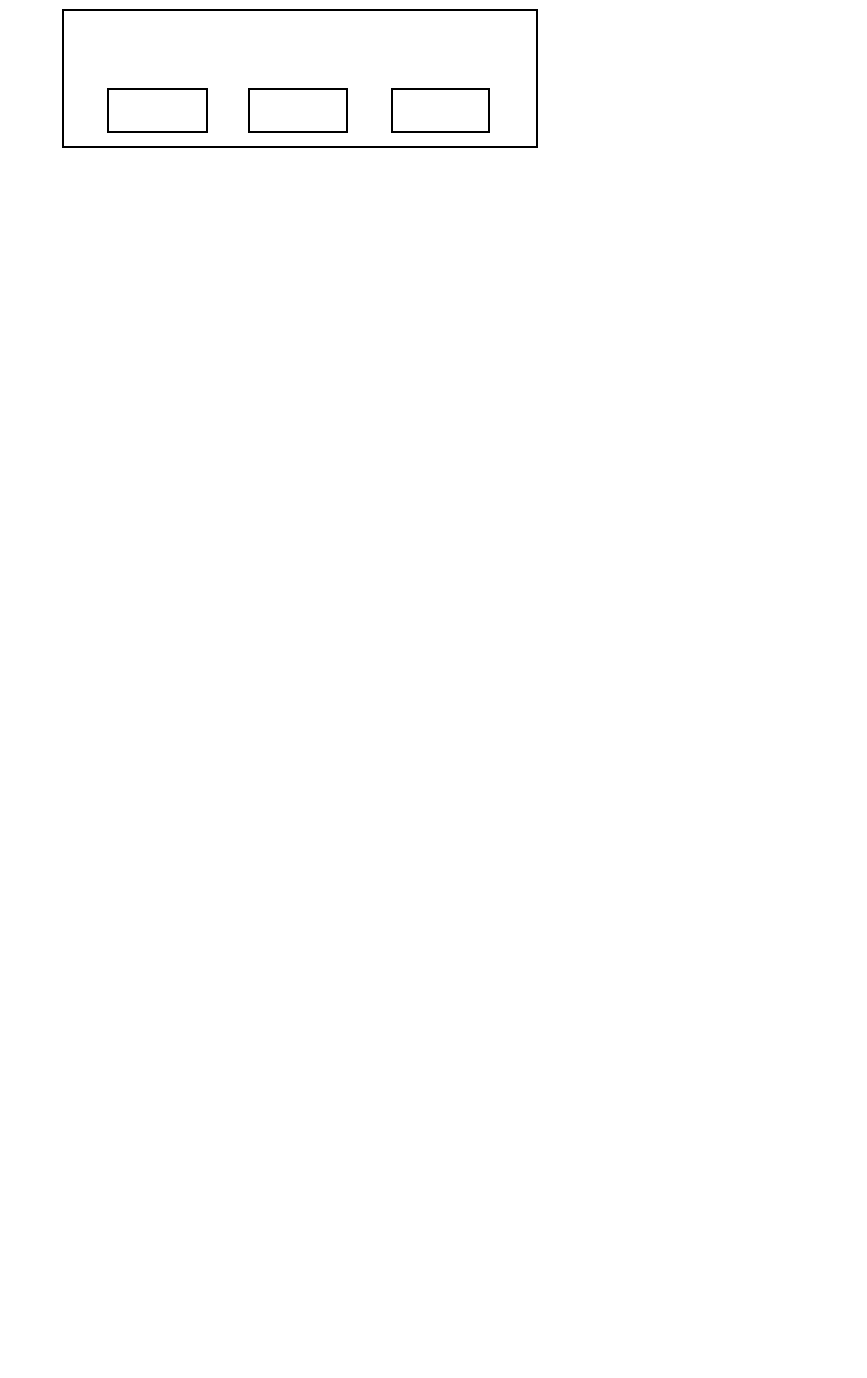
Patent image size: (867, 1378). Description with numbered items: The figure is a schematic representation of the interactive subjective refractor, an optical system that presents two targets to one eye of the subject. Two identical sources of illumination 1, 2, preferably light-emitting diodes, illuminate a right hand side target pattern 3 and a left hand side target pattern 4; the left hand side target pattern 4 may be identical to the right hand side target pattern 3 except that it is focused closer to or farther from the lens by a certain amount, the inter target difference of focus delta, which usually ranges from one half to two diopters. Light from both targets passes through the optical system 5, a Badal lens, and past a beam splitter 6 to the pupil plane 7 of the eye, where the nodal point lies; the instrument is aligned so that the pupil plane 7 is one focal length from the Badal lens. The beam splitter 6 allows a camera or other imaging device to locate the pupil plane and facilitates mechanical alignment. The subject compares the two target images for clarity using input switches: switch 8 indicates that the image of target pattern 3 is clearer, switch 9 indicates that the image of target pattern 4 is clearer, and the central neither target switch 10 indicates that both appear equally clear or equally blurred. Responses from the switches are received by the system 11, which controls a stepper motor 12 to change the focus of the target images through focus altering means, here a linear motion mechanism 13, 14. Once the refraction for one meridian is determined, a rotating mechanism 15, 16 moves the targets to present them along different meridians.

The source of illumination 1 is at (241, 824).
The source of illumination 2 is at (370, 802).
The right hand side target pattern 3 is at (240, 773).
The left hand side target pattern 4 is at (372, 750).
The optical system 5 is at (387, 570).
The beam splitter 6 is at (236, 530).
The pupil plane 7 is at (306, 305).
The switch 8 is at (131, 89).
The switch 9 is at (283, 689).
The neither target switch 10 is at (302, 89).
The system 11 is at (168, 1183).
The stepper motor 12 is at (438, 1060).
The linear motion mechanism 13 is at (142, 863).
The linear motion mechanism 14 is at (468, 815).
The rotating mechanism 15 is at (187, 898).
The rotating mechanism 16 is at (418, 878).